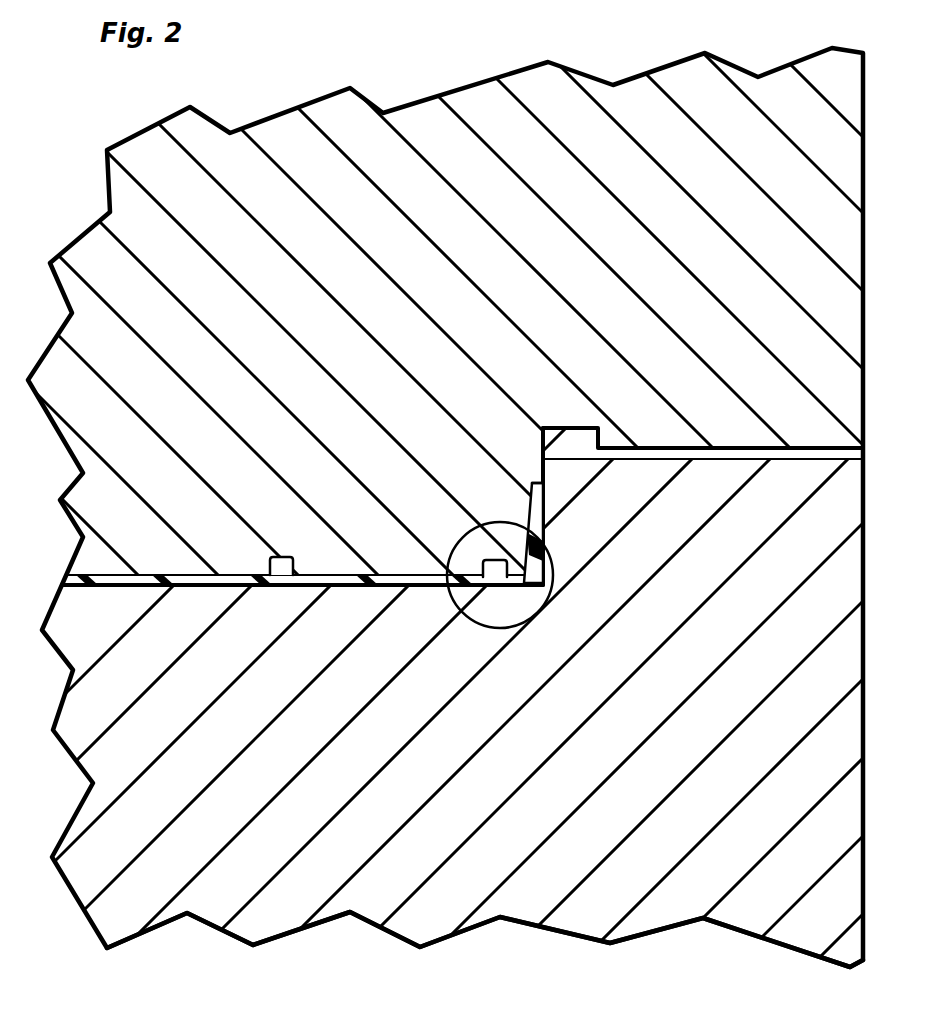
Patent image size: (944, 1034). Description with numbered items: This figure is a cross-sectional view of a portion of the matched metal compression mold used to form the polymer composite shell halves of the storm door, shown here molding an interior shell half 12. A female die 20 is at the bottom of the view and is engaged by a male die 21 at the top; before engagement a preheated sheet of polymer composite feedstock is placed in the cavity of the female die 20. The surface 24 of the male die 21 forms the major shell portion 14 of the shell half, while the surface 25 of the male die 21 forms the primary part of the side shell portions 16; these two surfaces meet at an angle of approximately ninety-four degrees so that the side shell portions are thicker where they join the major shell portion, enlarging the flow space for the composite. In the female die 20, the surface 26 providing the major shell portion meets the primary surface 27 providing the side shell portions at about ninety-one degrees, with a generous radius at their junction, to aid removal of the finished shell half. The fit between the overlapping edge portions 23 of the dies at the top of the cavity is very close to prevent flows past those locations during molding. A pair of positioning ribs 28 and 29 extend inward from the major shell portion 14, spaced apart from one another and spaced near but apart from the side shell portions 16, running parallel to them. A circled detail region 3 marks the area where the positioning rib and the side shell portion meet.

The detail region shown in FIG. 3 is at (538, 608).
The interior polymer material shell half 12 is at (222, 573).
The major shell portion 14 is at (350, 588).
The side shell portions 16 is at (538, 522).
The female die 20 is at (217, 910).
The male die 21 is at (482, 107).
The overlapping edge portions 23 is at (578, 427).
The surface of male die 24 is at (381, 572).
The surface of male die 25 is at (528, 503).
The surface of female die 26 is at (430, 588).
The primary surface of female die 27 is at (546, 498).
The positioning rib 28 is at (287, 557).
The positioning rib 29 is at (492, 553).